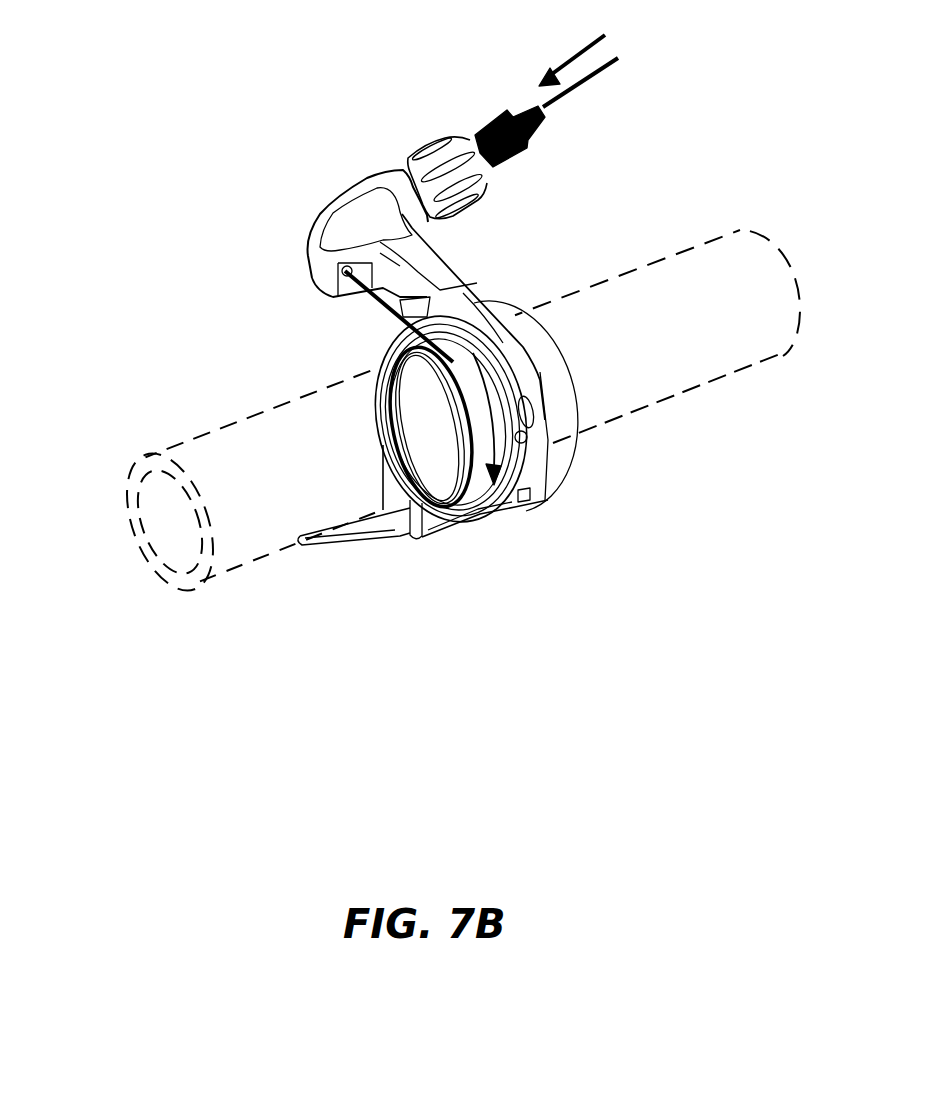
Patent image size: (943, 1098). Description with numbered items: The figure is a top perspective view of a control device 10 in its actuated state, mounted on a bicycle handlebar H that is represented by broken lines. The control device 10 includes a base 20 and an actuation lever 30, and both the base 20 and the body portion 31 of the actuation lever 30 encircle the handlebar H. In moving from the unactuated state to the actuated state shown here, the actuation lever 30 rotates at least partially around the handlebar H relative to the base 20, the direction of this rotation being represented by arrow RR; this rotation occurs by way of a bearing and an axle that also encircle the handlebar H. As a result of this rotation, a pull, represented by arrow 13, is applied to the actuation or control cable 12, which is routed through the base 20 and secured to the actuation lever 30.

The control device 10 is at (343, 348).
The actuation or control cable 12 is at (380, 303).
The pull arrow 13 is at (577, 56).
The base 20 is at (533, 232).
The actuation lever 30 is at (477, 492).
The body portion 31 is at (506, 546).
The handlebar H is at (217, 427).
The rotation arrow RR is at (487, 383).